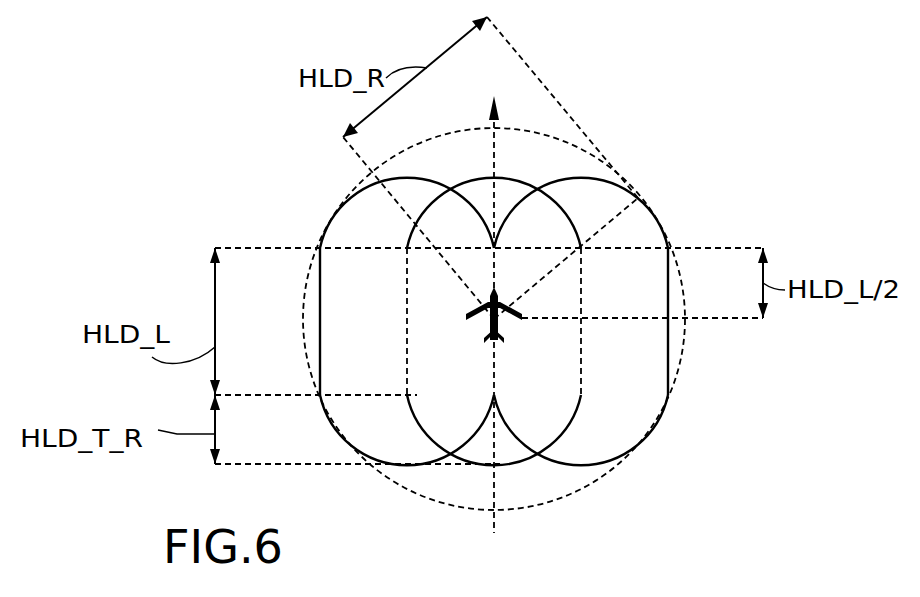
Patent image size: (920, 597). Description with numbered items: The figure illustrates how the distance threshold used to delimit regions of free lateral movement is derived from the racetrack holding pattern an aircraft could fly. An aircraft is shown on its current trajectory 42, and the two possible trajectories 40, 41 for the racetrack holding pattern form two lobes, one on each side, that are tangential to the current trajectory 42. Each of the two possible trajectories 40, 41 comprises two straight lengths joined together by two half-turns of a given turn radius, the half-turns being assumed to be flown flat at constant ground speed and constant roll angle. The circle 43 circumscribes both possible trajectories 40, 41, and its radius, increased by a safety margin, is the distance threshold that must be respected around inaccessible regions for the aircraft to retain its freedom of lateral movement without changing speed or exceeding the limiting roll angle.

The first possible trajectory for the racetrack holding pattern 40 is at (420, 465).
The second possible trajectory for the racetrack holding pattern 41 is at (582, 465).
The current trajectory of the aircraft 42 is at (495, 157).
The circle circumscribing the two possible trajectories 43 is at (437, 138).